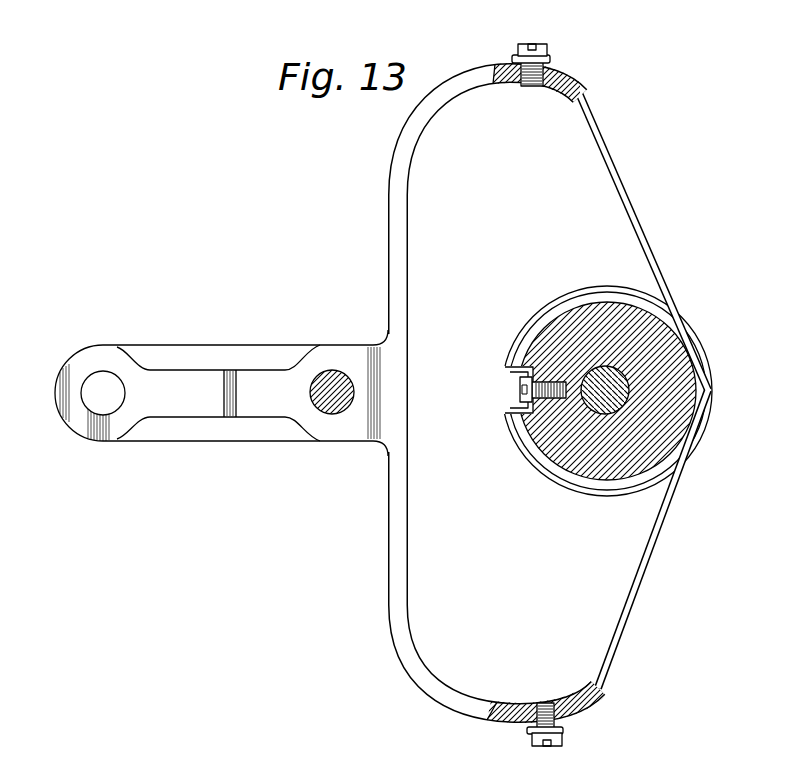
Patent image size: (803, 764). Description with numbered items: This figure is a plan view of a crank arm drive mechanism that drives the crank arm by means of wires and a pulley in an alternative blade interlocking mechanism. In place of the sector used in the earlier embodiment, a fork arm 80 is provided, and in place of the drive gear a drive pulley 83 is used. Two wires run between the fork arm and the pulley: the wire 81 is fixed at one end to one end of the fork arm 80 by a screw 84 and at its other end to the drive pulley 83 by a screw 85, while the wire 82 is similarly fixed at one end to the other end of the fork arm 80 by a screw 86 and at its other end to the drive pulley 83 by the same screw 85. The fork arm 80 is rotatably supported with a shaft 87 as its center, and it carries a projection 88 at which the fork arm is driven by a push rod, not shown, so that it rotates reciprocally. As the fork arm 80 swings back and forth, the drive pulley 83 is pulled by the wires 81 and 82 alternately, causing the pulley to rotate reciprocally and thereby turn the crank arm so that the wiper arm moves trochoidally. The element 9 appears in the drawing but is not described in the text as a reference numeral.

The shaft 9 is at (628, 397).
The fork arm 80 is at (540, 392).
The wire 81 is at (636, 216).
The wire 82 is at (641, 580).
The drive pulley 83 is at (594, 391).
The screw 84 is at (546, 48).
The screw 85 is at (520, 392).
The screw 86 is at (560, 738).
The shaft 87 is at (332, 408).
The projection 88 is at (107, 408).